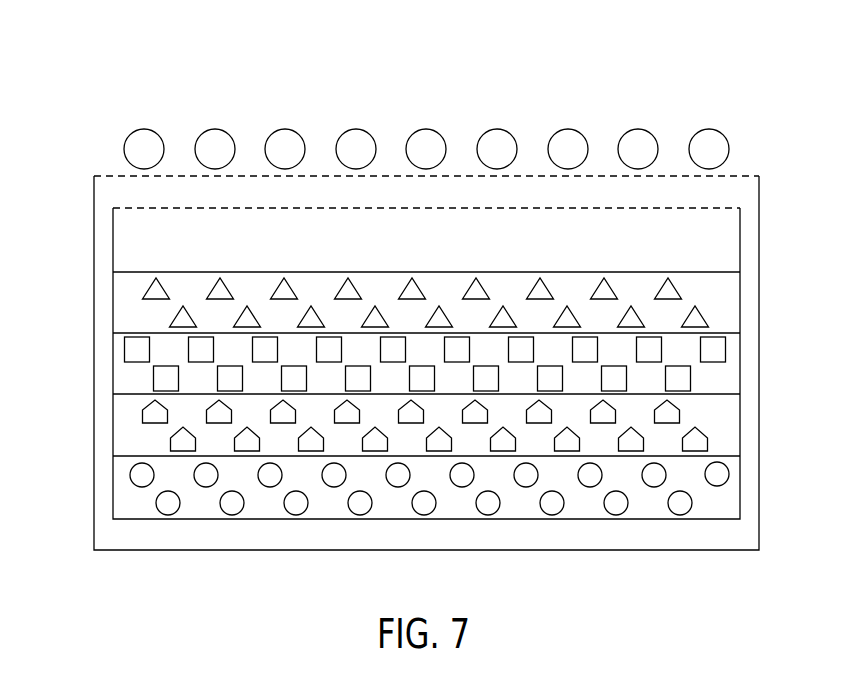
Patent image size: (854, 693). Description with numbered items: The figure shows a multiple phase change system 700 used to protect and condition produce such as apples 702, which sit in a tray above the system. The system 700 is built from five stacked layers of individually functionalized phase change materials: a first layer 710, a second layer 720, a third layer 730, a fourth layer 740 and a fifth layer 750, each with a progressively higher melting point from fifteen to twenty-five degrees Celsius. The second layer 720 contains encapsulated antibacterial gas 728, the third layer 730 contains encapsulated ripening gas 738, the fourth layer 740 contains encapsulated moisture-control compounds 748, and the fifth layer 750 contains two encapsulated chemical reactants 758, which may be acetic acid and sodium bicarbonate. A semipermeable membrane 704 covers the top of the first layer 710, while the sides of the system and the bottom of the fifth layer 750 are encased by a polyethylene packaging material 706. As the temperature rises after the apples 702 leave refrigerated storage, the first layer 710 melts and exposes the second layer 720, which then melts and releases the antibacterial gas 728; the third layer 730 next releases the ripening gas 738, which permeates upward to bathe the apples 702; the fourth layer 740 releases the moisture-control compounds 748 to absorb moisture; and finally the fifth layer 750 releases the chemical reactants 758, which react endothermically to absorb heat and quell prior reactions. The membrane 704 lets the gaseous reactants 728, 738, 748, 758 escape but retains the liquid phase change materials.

The multiple phase change system 700 is at (706, 72).
The apples 702 is at (730, 128).
The semipermeable membrane 704 is at (741, 196).
The packaging material 706 is at (601, 541).
The first layer 710 is at (123, 241).
The second layer 720 is at (123, 306).
The encapsulated antibacterial gas 728 is at (706, 318).
The third layer 730 is at (123, 367).
The encapsulated ripening gas 738 is at (727, 349).
The fourth layer 740 is at (123, 430).
The encapsulated moisture-control compounds 748 is at (707, 445).
The fifth layer 750 is at (123, 493).
The encapsulated chemical reactants 758 is at (729, 472).